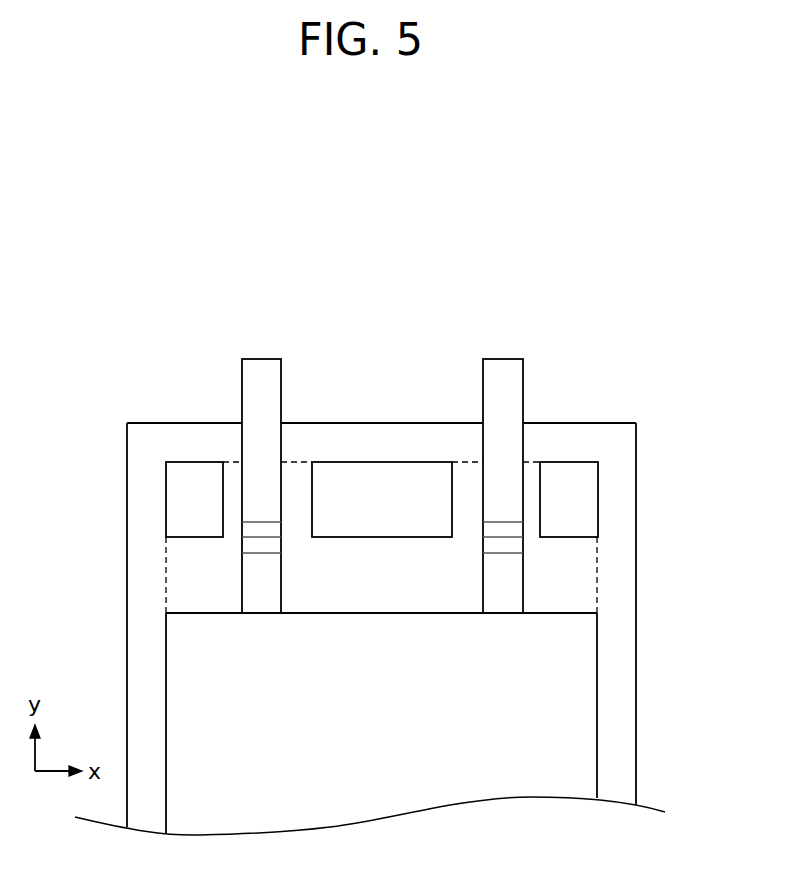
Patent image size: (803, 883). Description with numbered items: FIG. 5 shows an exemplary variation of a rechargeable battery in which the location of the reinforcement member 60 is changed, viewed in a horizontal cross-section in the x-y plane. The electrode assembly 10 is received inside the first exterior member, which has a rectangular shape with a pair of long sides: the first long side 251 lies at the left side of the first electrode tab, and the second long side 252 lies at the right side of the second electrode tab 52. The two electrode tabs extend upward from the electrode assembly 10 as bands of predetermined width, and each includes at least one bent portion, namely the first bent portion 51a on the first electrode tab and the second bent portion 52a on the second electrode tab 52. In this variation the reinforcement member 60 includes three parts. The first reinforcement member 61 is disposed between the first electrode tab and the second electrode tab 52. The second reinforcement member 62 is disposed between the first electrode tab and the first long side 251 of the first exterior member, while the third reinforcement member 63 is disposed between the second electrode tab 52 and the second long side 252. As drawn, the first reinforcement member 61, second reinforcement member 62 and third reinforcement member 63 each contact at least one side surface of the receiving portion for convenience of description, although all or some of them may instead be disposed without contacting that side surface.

The electrode assembly 10 is at (602, 715).
The second electrode tab 52 is at (260, 372).
The first bent portion 51a is at (241, 547).
The second bent portion 52a is at (524, 547).
The reinforcement member 60 is at (677, 402).
The first reinforcement member 61 is at (380, 481).
The second reinforcement member 62 is at (195, 481).
The third reinforcement member 63 is at (568, 481).
The first long side 251 is at (127, 453).
The second long side 252 is at (636, 485).